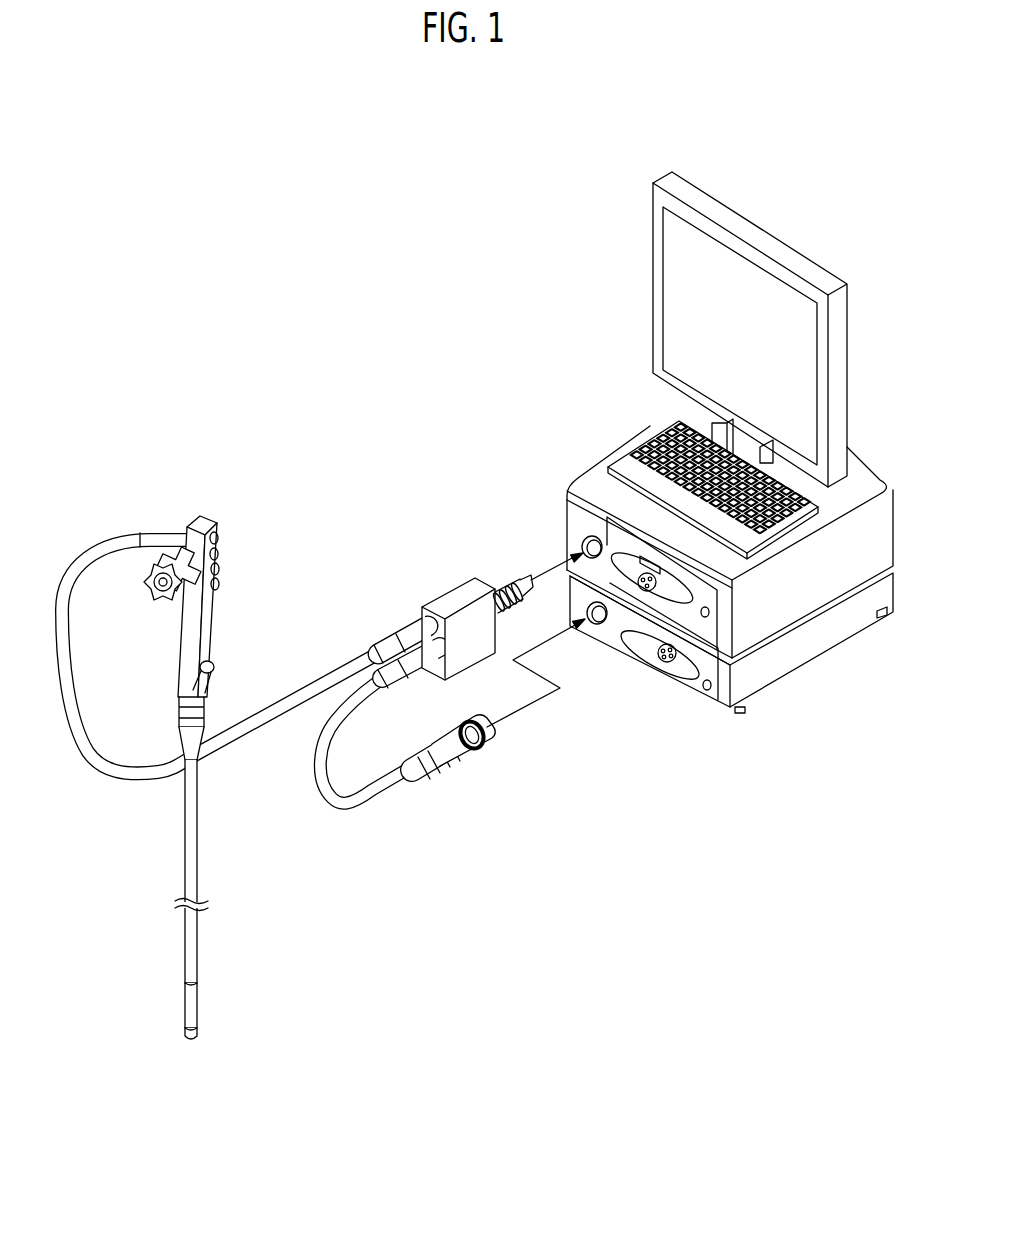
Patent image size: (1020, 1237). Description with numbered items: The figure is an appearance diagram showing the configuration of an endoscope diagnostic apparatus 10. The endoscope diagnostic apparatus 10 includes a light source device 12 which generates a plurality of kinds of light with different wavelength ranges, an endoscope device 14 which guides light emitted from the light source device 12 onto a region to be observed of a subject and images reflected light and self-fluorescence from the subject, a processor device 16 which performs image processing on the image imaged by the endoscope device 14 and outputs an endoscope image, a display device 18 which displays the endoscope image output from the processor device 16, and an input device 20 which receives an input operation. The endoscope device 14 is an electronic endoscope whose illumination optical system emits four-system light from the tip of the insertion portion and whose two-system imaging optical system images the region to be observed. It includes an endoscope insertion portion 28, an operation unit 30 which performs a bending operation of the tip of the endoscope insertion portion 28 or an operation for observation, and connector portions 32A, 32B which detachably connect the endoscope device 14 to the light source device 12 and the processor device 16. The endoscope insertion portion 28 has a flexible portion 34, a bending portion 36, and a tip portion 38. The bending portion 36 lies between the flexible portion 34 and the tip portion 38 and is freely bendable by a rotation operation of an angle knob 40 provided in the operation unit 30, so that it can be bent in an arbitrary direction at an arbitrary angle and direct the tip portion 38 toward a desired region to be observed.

The endoscope diagnostic apparatus 10 is at (280, 315).
The light source device 12 is at (818, 590).
The endoscope device 14 is at (335, 518).
The processor device 16 is at (758, 677).
The display device 18 is at (652, 208).
The input device 20 is at (652, 427).
The endoscope insertion portion 28 is at (232, 873).
The operation unit 30 is at (186, 508).
The connector portion 32A is at (467, 593).
The connector portion 32B is at (452, 757).
The flexible portion 34 is at (192, 800).
The bending portion 36 is at (197, 993).
The tip portion 38 is at (197, 1032).
The angle knob 40 is at (150, 567).